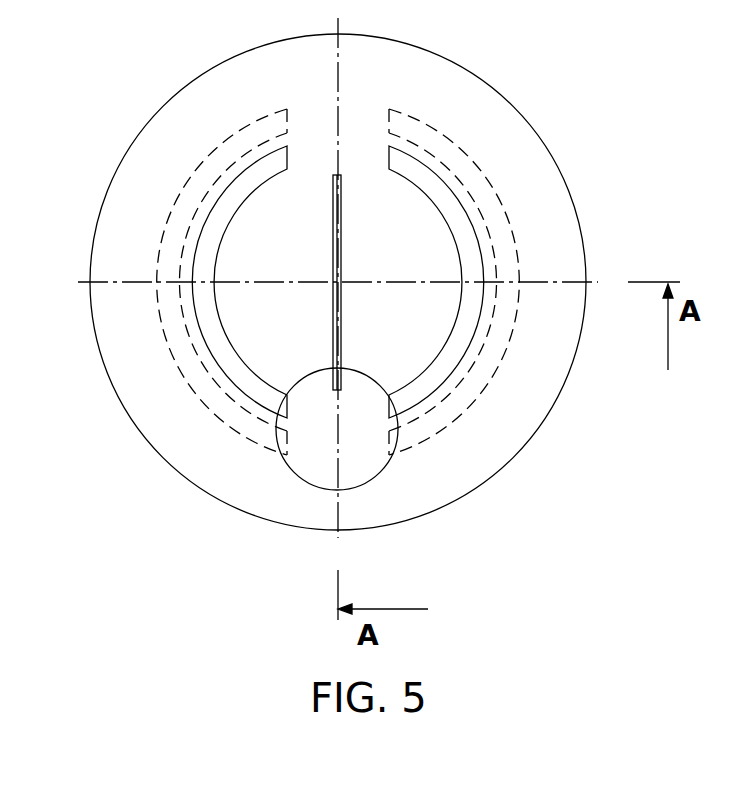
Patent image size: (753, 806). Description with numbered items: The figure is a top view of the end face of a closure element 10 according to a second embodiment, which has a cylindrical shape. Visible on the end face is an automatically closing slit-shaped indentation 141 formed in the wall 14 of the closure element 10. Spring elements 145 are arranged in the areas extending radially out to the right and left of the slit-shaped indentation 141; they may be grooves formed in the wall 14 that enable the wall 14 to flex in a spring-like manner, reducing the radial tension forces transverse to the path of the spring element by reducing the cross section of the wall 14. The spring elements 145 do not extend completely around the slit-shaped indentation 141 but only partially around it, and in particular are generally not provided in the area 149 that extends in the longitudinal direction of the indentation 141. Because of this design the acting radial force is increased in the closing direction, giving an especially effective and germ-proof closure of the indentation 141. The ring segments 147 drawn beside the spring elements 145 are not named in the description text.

The closure element 10 is at (517, 126).
The wall 14 is at (328, 268).
The slit-shaped indentation 141 is at (342, 227).
The spring elements 145 is at (178, 350).
The ring segments 147 is at (412, 165).
The area 149 is at (347, 112).